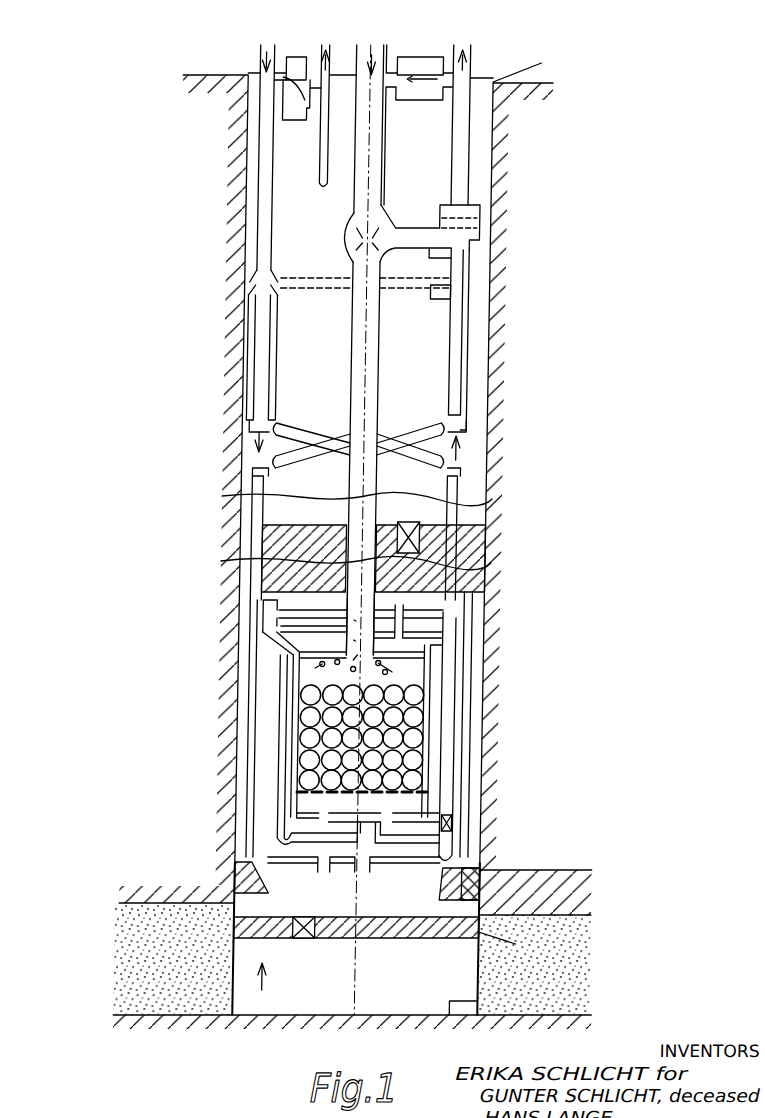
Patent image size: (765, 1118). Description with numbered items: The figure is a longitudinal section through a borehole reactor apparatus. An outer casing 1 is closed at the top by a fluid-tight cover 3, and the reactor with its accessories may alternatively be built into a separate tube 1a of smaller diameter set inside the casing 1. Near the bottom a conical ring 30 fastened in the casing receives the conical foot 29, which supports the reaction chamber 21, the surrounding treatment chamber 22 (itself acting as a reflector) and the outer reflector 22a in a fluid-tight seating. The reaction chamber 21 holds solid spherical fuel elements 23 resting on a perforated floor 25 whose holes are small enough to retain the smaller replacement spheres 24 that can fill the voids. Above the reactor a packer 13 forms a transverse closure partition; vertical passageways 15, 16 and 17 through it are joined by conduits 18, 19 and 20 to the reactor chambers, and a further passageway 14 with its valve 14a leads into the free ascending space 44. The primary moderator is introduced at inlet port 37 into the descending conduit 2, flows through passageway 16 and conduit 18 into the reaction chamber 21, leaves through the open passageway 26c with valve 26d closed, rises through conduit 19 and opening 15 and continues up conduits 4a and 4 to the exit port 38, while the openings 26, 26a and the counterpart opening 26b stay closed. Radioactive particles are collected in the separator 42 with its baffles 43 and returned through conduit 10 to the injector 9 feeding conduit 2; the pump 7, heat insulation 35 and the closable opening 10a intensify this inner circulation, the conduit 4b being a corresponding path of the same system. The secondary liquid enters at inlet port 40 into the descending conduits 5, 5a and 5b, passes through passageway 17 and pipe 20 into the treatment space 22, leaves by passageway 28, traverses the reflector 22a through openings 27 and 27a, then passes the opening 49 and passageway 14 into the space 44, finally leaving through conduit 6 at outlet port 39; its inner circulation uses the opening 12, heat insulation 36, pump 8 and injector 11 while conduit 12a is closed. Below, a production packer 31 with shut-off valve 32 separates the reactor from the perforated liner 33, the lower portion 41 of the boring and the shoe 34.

The outer casing 1 is at (492, 130).
The tube 1a is at (263, 690).
The descending conduit 2 is at (366, 158).
The fluid-tight cover 3 is at (523, 67).
The conduit 4 is at (463, 104).
The conduit 4a is at (454, 458).
The right upper nozzle pipe 4b is at (439, 437).
The descending conduit 5 is at (250, 112).
The descending conduit 5a is at (254, 440).
The left lower nozzle pipe 5b is at (254, 475).
The conduit 6 is at (312, 187).
The pump 7 is at (408, 57).
The pump 8 is at (290, 57).
The injector 9 is at (386, 213).
The conduit 10 is at (426, 255).
The opening 10a is at (334, 243).
The injector 11 is at (246, 292).
The opening 12 is at (246, 278).
The conduit 12a is at (451, 292).
The packer 13 is at (446, 588).
The passageway 14 is at (415, 552).
The valve 14a is at (421, 525).
The vertical passageway 15 is at (420, 562).
The vertical passageway 16 is at (264, 572).
The vertical passageway 17 is at (259, 552).
The conduit 18 is at (467, 605).
The conduit 19 is at (493, 668).
The conduit 20 is at (264, 612).
The reaction chamber 21 is at (427, 672).
The treatment chamber 22 is at (594, 748).
The reflector 22a is at (266, 742).
The fuel elements 23 is at (316, 714).
The replacement fuel granules 24 is at (313, 667).
The floor 25 is at (437, 792).
The opening 26 is at (493, 850).
The opening 26a is at (283, 818).
The valve 26b is at (492, 822).
The passageway 26c is at (492, 812).
The valve 26d is at (493, 832).
The opening 27 is at (380, 850).
The opening 27a is at (319, 866).
The passageway 28 is at (472, 625).
The conical foot 29 is at (485, 890).
The conical ring 30 is at (486, 922).
The production packer 31 is at (586, 943).
The shut-off valve 32 is at (303, 923).
The perforated liner 33 is at (239, 968).
The shoe 34 is at (590, 1010).
The heat insulation 35 is at (466, 360).
The heat insulation 36 is at (246, 350).
The inlet port 37 is at (367, 52).
The exit port 38 is at (470, 117).
The outlet port 39 is at (333, 108).
The inlet port 40 is at (266, 150).
The lower portion of the boring 41 is at (270, 990).
The separator 42 is at (476, 217).
The baffles 43 is at (457, 220).
The free space 44 is at (417, 330).
The opening 49 is at (273, 622).